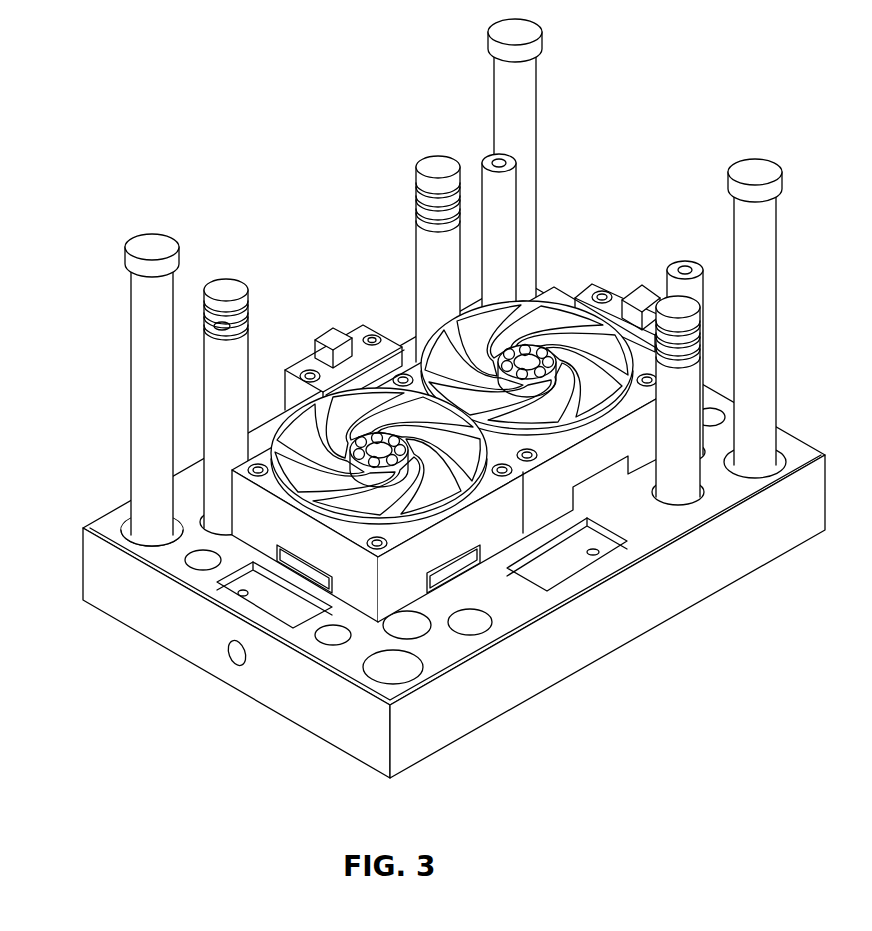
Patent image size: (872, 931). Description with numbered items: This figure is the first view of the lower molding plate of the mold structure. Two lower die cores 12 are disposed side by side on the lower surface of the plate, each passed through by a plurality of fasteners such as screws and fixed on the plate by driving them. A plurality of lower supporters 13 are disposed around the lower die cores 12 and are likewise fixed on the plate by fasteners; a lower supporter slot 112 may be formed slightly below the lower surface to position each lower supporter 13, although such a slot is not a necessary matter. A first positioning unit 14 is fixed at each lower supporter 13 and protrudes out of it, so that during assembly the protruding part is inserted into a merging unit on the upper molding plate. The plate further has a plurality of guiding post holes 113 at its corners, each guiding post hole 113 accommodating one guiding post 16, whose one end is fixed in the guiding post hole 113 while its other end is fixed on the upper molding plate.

The lower die core 12 is at (573, 462).
The lower supporter slot 112 is at (578, 554).
The guiding post hole 113 is at (388, 670).
The lower supporter 13 is at (310, 370).
The first positioning unit 14 is at (337, 333).
The guiding post 16 is at (228, 297).